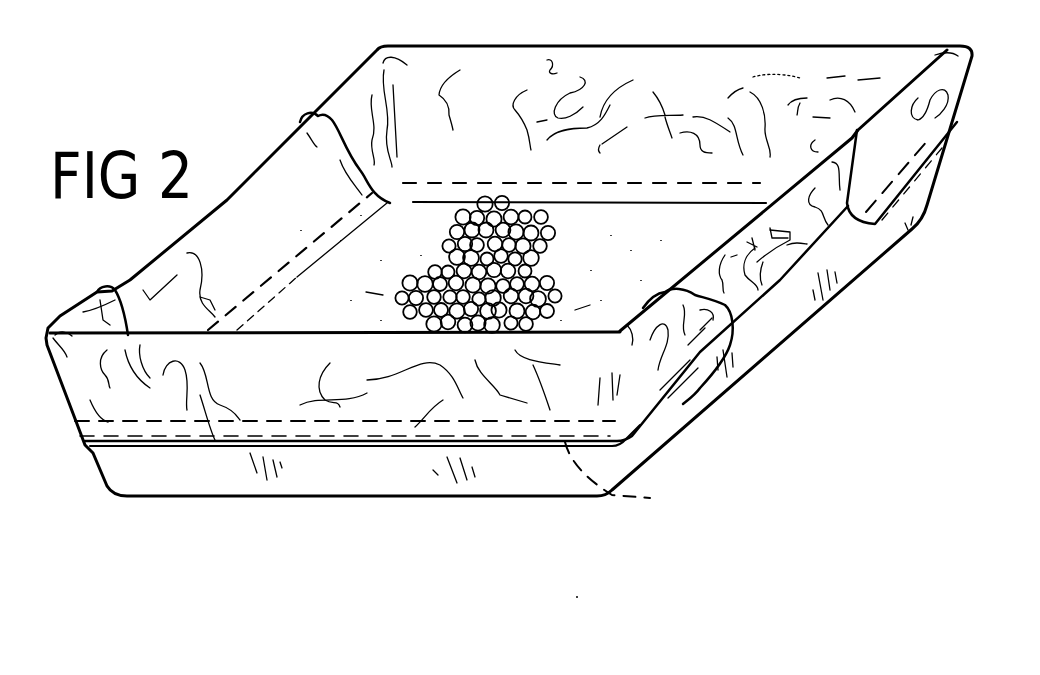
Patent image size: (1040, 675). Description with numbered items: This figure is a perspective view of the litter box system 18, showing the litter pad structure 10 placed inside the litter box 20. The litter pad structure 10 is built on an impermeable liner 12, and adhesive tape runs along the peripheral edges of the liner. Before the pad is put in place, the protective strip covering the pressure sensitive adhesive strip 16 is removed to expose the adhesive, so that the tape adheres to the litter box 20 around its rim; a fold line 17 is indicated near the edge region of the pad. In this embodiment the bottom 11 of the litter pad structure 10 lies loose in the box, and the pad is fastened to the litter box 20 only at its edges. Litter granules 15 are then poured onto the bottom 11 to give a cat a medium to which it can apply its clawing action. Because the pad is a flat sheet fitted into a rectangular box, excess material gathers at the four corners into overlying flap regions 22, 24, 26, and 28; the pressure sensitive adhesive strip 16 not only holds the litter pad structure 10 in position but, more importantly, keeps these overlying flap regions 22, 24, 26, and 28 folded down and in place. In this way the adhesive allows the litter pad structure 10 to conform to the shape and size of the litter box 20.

The litter pad structure 10 is at (740, 60).
The bottom 11 is at (652, 222).
The impermeable liner 12 is at (503, 443).
The litter granules 15 is at (533, 228).
The pressure sensitive adhesive strip 16 is at (629, 477).
The fold line 17 is at (518, 140).
The litter box system 18 is at (894, 298).
The litter box 20 is at (785, 330).
The overlying flap region 22 is at (958, 113).
The overlying flap region 24 is at (350, 150).
The overlying flap region 26 is at (712, 378).
The overlying flap region 28 is at (115, 290).